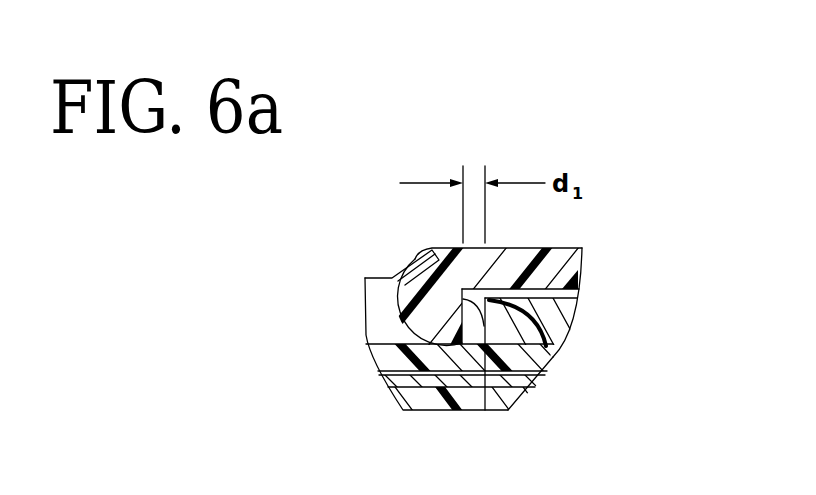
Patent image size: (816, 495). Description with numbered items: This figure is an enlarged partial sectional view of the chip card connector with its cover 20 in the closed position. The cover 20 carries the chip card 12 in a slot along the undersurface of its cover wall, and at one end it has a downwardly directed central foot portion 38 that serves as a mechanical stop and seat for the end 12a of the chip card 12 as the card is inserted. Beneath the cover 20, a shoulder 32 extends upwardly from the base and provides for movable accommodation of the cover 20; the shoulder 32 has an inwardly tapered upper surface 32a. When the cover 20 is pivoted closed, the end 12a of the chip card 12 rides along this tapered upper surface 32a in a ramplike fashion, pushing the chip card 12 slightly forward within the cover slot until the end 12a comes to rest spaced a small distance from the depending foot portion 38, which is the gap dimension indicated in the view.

The cover 20 is at (576, 265).
The central foot portion 38 is at (428, 277).
The shoulder 32 is at (378, 322).
The inwardly tapered upper surface 32a is at (376, 274).
The chip card 12 is at (560, 315).
The end of chip card 12a is at (600, 252).